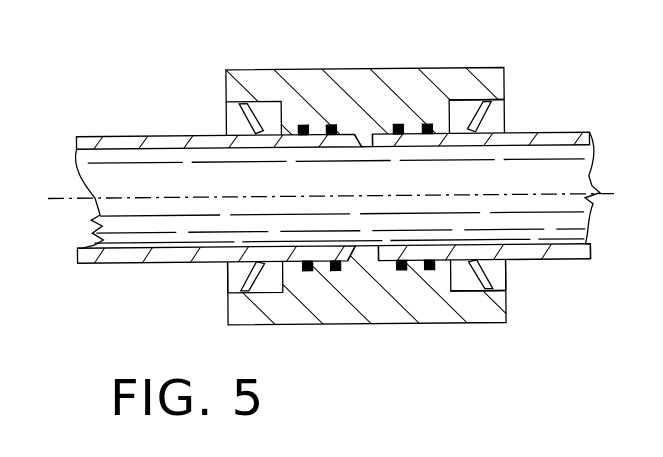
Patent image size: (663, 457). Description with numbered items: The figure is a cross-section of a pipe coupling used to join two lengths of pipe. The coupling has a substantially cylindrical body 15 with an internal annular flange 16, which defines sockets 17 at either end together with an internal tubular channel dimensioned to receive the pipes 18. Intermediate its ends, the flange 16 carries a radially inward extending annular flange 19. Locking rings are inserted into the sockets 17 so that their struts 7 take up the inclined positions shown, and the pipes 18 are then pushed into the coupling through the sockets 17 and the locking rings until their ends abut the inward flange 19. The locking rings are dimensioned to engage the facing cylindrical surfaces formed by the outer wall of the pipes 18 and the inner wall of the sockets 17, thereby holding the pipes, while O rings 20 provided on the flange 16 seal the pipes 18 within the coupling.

The strut 7 is at (233, 112).
The cylindrical body 15 is at (258, 308).
The internal annular flange 16 is at (438, 105).
The socket 17 is at (228, 270).
The pipe 18 is at (100, 133).
The radially inward extending annular flange 19 is at (359, 140).
The O ring 20 is at (333, 125).